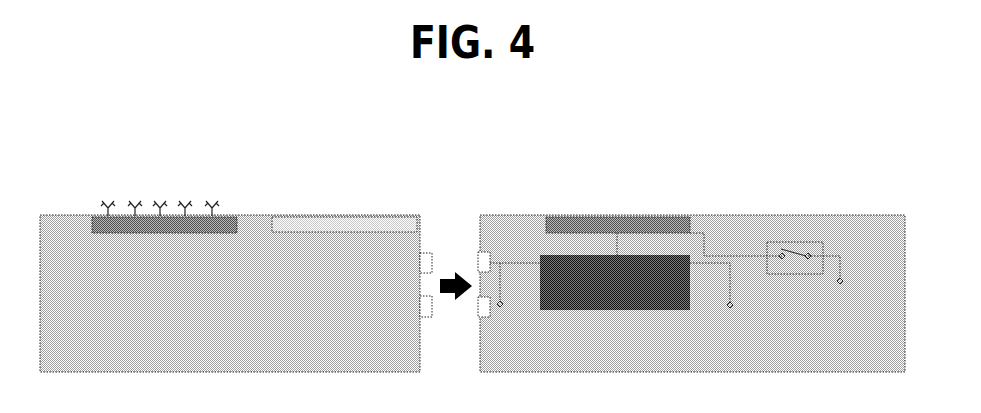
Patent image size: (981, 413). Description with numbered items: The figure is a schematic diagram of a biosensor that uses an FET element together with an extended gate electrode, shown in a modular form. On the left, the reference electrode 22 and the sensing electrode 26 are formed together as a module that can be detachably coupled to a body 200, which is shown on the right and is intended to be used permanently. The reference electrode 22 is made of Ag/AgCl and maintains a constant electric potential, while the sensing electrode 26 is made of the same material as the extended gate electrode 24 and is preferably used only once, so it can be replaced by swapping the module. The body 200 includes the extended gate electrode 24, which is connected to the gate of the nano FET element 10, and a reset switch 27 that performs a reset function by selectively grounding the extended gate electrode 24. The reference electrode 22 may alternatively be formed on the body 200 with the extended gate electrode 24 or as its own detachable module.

The body 200 is at (868, 215).
The nano FET element 10 is at (625, 311).
The reference electrode 22 is at (347, 233).
The extended gate electrode 24 is at (618, 216).
The sensing electrode 26 is at (160, 234).
The reset switch 27 is at (793, 242).